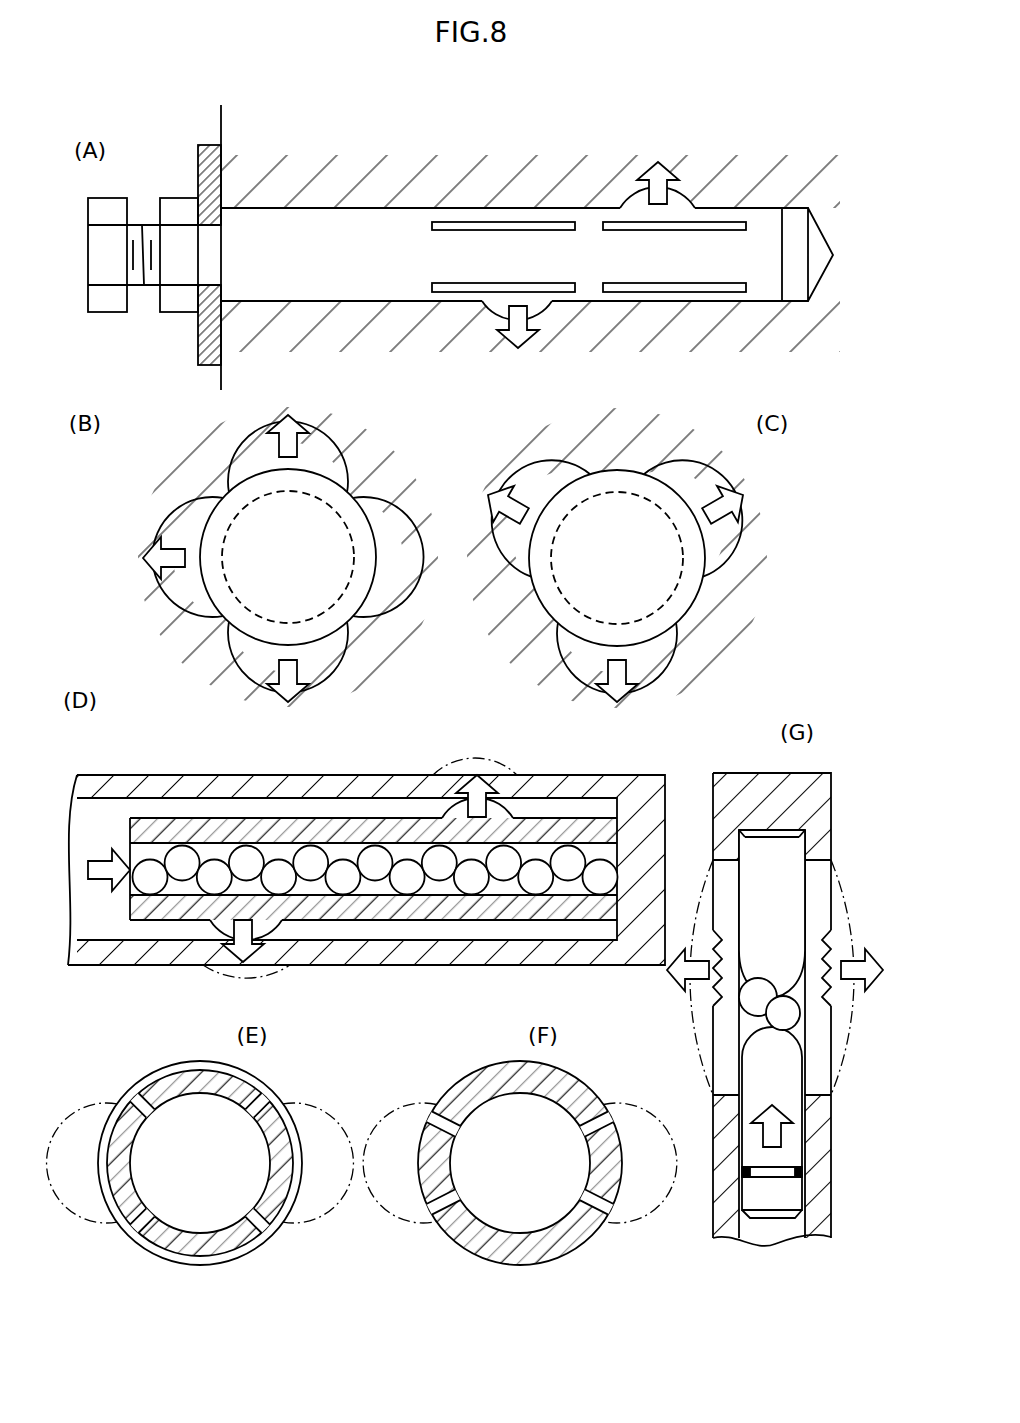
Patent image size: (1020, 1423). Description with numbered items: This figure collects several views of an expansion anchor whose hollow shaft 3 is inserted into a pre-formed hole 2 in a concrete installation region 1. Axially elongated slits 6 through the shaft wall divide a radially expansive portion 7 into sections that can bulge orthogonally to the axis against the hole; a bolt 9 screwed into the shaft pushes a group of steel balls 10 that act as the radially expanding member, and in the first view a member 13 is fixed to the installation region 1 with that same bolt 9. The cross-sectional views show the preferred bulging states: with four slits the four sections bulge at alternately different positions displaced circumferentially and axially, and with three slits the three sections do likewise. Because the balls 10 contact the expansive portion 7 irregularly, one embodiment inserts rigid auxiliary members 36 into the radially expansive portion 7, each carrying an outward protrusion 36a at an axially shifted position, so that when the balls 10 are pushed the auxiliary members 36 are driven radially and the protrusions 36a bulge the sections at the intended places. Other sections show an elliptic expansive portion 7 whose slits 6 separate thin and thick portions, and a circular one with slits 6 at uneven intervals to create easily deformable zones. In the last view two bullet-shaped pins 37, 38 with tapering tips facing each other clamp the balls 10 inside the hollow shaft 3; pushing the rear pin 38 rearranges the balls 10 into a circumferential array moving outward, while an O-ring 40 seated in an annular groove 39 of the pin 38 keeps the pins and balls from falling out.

The installation region 1 is at (442, 172).
The pre-formed hole 2 is at (360, 296).
The hollow shaft 3 is at (350, 250).
The slits 6 is at (622, 282).
The radially expansive portion 7 is at (563, 216).
The bolt 9 is at (105, 308).
The balls 10 is at (495, 870).
The member 13 is at (205, 345).
The auxiliary members 36 is at (260, 828).
The outward protrusions 36a is at (455, 807).
The pin 37 is at (757, 853).
The pin 38 is at (747, 1110).
The annular groove 39 is at (767, 1170).
The O-ring 40 is at (748, 1185).